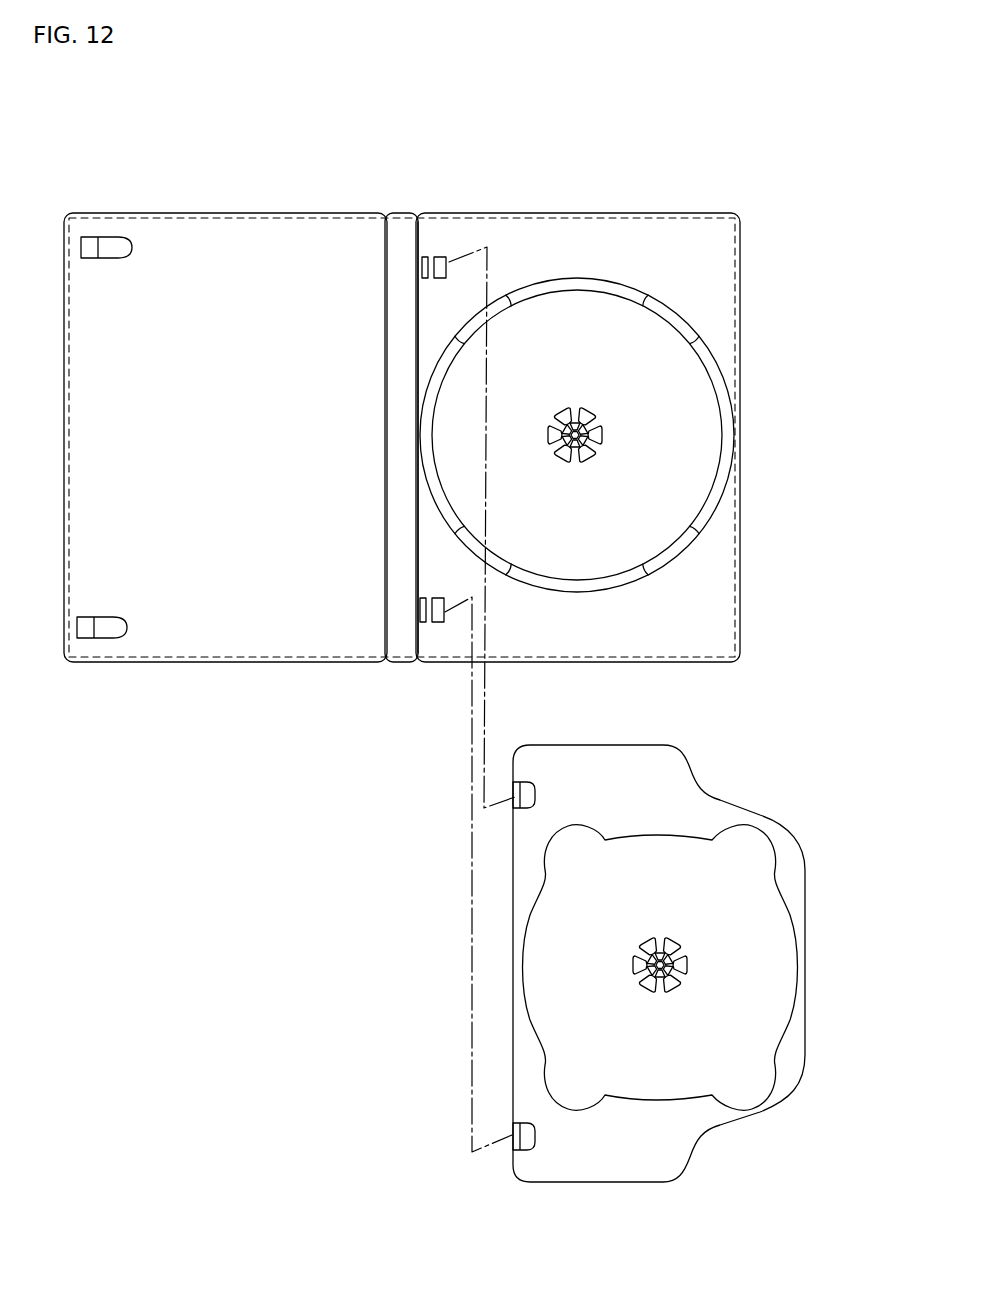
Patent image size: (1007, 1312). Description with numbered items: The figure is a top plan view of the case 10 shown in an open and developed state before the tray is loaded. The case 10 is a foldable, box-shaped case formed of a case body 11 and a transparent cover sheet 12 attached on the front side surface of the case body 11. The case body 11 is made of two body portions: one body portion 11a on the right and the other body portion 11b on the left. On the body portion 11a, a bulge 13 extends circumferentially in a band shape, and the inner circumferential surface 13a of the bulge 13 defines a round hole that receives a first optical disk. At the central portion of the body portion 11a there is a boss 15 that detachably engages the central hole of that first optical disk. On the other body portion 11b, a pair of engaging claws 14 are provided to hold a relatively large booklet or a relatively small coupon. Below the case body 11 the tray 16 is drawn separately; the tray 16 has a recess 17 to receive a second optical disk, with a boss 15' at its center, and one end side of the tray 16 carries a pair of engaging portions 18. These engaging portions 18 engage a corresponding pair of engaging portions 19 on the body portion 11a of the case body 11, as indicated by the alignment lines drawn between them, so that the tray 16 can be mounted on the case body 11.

The case 10 is at (692, 180).
The case body 11 is at (488, 158).
The body portion 11a is at (486, 213).
The body portion 11b is at (372, 213).
The transparent cover sheet 12 is at (740, 258).
The bulge 13 is at (594, 284).
The inner circumferential surface 13a is at (577, 297).
The engaging claws 14 is at (113, 259).
The boss 15 is at (599, 419).
The disc holding hub of tray 15' is at (689, 949).
The tray 16 is at (755, 784).
The recess 17 is at (662, 840).
The engaging portions 18 is at (535, 793).
The engaging portions 19 is at (434, 279).